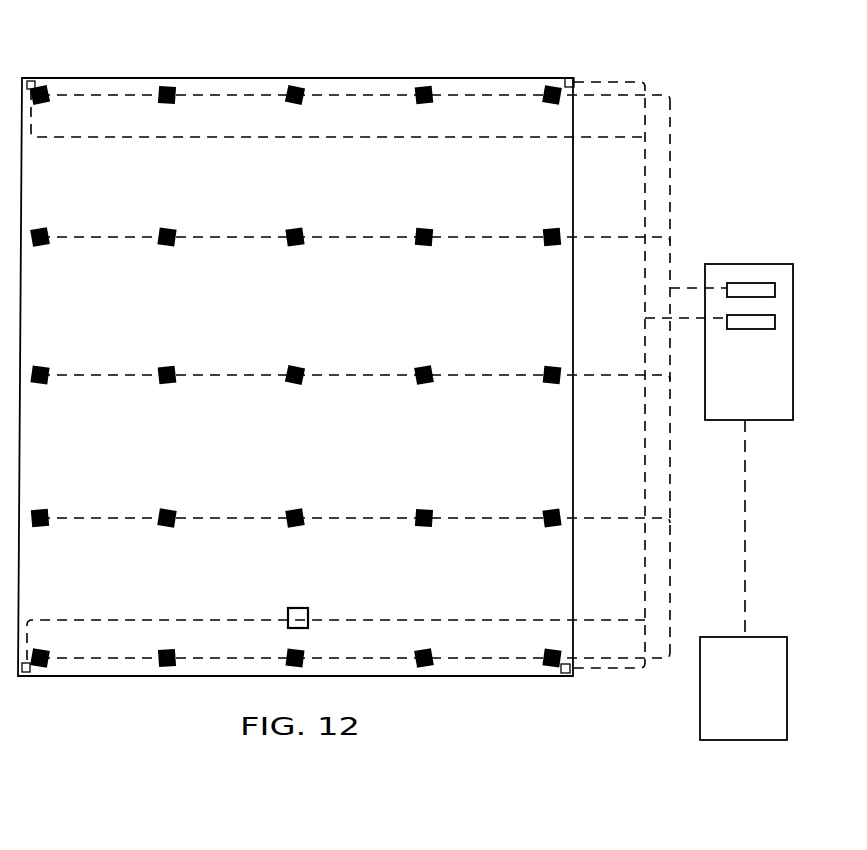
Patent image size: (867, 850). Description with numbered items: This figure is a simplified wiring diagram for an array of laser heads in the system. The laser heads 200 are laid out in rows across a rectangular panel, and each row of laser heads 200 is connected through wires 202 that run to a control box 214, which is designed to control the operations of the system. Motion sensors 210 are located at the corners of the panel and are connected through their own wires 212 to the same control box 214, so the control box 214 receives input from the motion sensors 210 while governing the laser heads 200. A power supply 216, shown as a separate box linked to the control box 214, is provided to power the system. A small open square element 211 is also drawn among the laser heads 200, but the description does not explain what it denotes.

The laser head 200 is at (172, 228).
The wire 202 is at (370, 233).
The motion sensor 210 is at (33, 80).
The reference sensor 211 is at (333, 598).
The wire 212 is at (247, 92).
The control box 214 is at (745, 264).
The power supply 216 is at (745, 742).